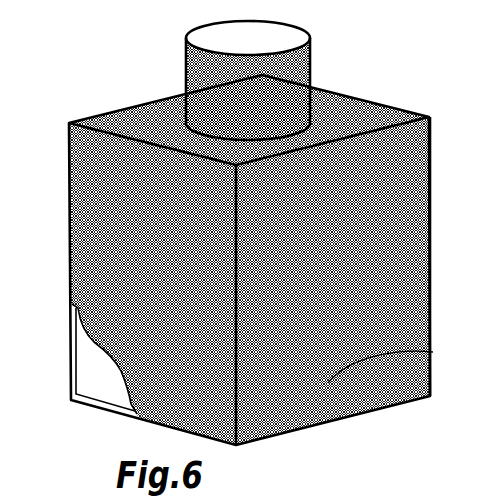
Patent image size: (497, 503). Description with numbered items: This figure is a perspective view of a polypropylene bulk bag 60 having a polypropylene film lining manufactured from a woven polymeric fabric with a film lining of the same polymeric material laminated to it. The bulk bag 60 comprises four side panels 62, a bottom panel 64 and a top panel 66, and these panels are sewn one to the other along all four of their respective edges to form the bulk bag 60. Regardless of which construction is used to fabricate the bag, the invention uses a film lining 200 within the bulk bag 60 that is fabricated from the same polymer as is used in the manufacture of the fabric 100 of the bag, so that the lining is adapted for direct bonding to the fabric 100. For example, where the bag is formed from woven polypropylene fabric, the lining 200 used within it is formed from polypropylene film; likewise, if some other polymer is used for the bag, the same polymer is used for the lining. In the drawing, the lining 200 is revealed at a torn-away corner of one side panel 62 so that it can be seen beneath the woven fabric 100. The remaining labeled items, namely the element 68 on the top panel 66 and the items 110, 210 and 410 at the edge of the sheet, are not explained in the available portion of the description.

The bulk bag 60 is at (270, 249).
The side panels 62 is at (163, 273).
The bottom panel 64 is at (425, 344).
The top panel 66 is at (370, 100).
The cylindrical protrusion 68 is at (304, 58).
The fabric 100 is at (430, 236).
The adjacent element 110 is at (496, 255).
The film lining 200 is at (98, 378).
The adjacent element 210 is at (496, 432).
The adjacent element 410 is at (496, 276).